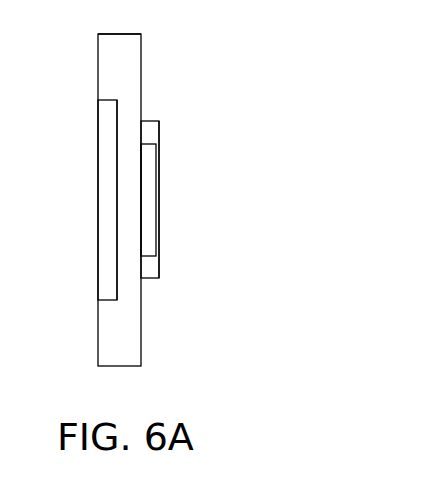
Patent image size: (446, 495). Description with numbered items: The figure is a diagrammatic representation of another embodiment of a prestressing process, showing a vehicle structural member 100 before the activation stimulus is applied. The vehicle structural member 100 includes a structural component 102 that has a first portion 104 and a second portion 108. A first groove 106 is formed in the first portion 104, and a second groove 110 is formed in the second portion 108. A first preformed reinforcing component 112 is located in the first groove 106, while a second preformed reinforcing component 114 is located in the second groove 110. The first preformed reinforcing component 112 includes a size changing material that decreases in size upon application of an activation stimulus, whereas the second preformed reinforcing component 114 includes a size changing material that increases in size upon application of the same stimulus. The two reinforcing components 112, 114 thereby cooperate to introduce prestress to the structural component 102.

The vehicle structural member 100 is at (213, 52).
The structural component 102 is at (142, 315).
The first portion 104 is at (108, 52).
The first groove 106 is at (112, 122).
The second portion 108 is at (159, 265).
The second groove 110 is at (142, 172).
The first preformed reinforcing component 112 is at (108, 198).
The second preformed reinforcing component 114 is at (159, 230).